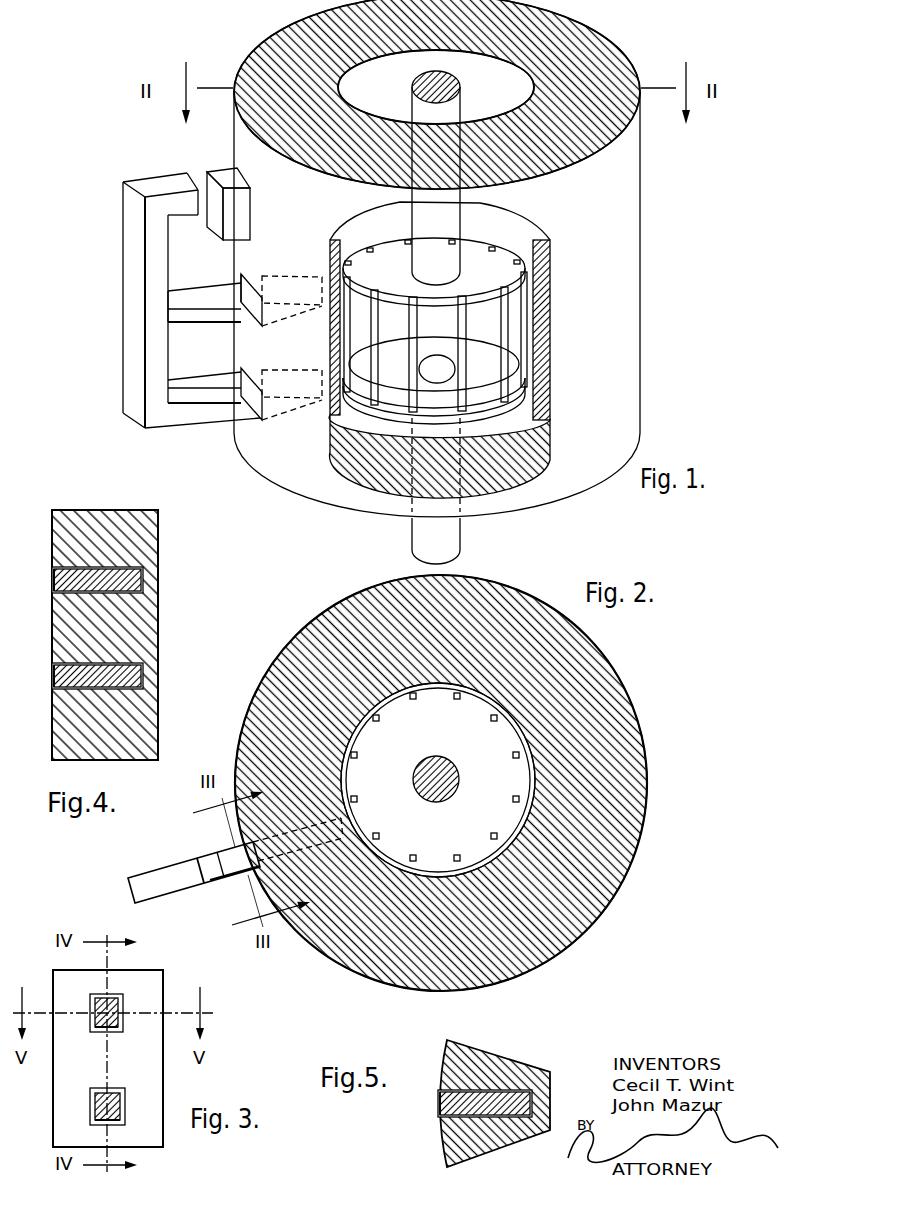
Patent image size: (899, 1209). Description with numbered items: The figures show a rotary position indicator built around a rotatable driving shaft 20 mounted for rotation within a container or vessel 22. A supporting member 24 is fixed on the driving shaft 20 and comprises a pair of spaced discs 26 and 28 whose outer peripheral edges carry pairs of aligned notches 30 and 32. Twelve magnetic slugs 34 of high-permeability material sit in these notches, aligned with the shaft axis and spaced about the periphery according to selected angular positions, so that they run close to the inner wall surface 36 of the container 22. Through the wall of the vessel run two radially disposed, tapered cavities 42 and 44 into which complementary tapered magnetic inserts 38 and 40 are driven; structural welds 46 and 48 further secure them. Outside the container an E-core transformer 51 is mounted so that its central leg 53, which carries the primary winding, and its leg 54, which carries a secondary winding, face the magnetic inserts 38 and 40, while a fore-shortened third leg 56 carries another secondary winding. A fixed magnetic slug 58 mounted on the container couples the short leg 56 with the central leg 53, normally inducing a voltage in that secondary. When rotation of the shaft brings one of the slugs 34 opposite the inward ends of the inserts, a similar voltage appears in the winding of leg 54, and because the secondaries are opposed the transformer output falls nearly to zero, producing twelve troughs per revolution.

In FIG. 1, the driving shaft 20 is at (498, 105).
In FIG. 2, the driving shaft 20 is at (436, 779).
In FIG. 1, the container 22 is at (597, 46).
In FIG. 2, the container 22 is at (666, 709).
In FIG. 4, the container 22 is at (127, 518).
In FIG. 3, the container 22 is at (148, 970).
In FIG. 5, the container 22 is at (506, 1063).
In FIG. 1, the supporting member 24 is at (520, 257).
In FIG. 1, the disc 26 is at (478, 253).
In FIG. 1, the disc 28 is at (490, 420).
In FIG. 1, the notches 30 is at (498, 291).
In FIG. 1, the notches 32 is at (486, 400).
In FIG. 1, the magnetic slugs 34 is at (495, 336).
In FIG. 2, the magnetic slugs 34 is at (519, 753).
In FIG. 2, the inner wall surface 36 is at (434, 690).
In FIG. 1, the magnetic insert 38 is at (296, 312).
In FIG. 2, the magnetic insert 38 is at (348, 821).
In FIG. 4, the magnetic insert 38 is at (137, 584).
In FIG. 3, the magnetic insert 38 is at (95, 1000).
In FIG. 5, the magnetic insert 38 is at (440, 1110).
In FIG. 1, the magnetic insert 40 is at (296, 406).
In FIG. 4, the magnetic insert 40 is at (137, 676).
In FIG. 3, the magnetic insert 40 is at (95, 1118).
In FIG. 1, the cavity 42 is at (300, 280).
In FIG. 2, the cavity 42 is at (350, 797).
In FIG. 4, the cavity 42 is at (140, 569).
In FIG. 3, the cavity 42 is at (121, 997).
In FIG. 5, the cavity 42 is at (527, 1088).
In FIG. 1, the cavity 44 is at (297, 369).
In FIG. 4, the cavity 44 is at (130, 689).
In FIG. 3, the cavity 44 is at (121, 1110).
In FIG. 1, the structural weld 46 is at (256, 281).
In FIG. 4, the structural weld 46 is at (54, 566).
In FIG. 3, the structural weld 46 is at (98, 1032).
In FIG. 5, the structural weld 46 is at (441, 1091).
In FIG. 1, the structural weld 48 is at (259, 373).
In FIG. 4, the structural weld 48 is at (54, 661).
In FIG. 3, the structural weld 48 is at (116, 1090).
In FIG. 1, the E-core transformer 51 is at (133, 262).
In FIG. 2, the E-core transformer 51 is at (123, 876).
In FIG. 1, the central leg 53 is at (216, 328).
In FIG. 2, the central leg 53 is at (212, 882).
In FIG. 1, the leg 54 is at (216, 420).
In FIG. 1, the fore-shortened third leg 56 is at (155, 183).
In FIG. 2, the fore-shortened third leg 56 is at (167, 880).
In FIG. 1, the fixed magnetic slug 58 is at (224, 176).
In FIG. 2, the fixed magnetic slug 58 is at (230, 861).